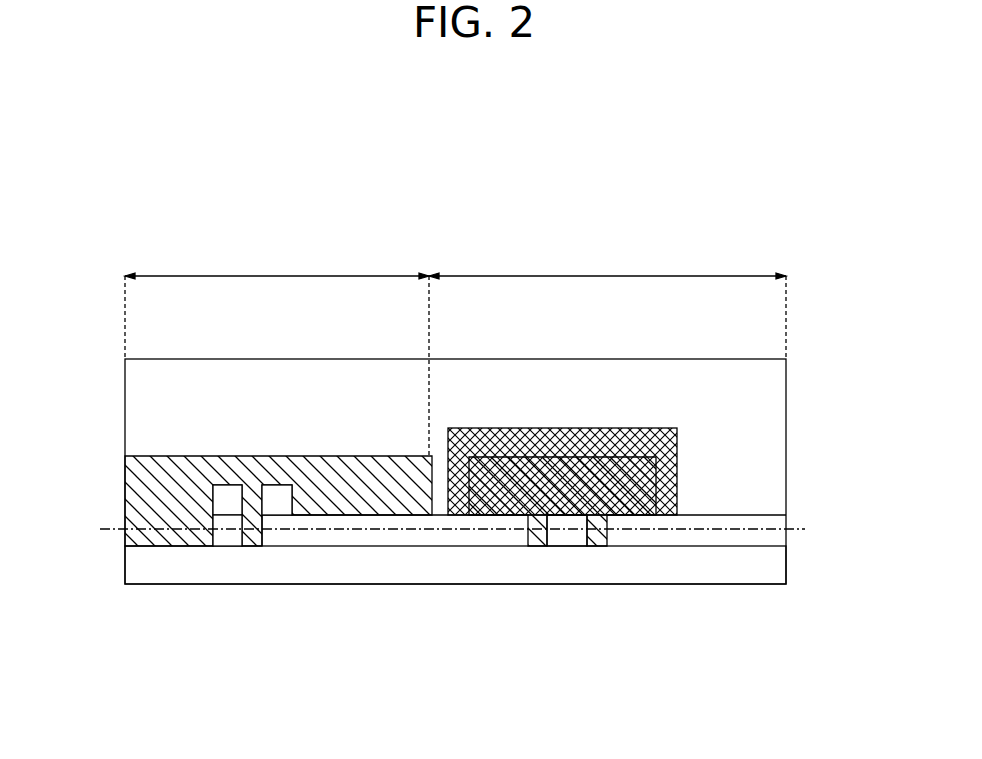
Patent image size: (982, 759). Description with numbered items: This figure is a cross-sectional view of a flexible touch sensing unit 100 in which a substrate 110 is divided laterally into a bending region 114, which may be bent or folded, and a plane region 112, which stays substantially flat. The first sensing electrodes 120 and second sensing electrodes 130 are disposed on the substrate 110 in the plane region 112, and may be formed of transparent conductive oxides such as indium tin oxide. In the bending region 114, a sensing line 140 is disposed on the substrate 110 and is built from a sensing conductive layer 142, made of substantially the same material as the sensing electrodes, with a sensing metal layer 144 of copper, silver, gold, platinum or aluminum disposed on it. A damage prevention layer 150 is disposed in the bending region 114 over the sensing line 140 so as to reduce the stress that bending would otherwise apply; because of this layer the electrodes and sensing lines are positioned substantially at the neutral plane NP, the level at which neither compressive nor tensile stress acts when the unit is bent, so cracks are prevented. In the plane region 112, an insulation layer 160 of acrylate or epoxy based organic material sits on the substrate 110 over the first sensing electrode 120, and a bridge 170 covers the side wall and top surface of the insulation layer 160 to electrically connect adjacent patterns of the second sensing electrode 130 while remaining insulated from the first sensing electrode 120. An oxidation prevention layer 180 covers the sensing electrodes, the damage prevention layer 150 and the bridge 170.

The flexible touch sensing unit 100 is at (437, 160).
The substrate 110 is at (133, 563).
The plane region 112 is at (607, 305).
The bending region 114 is at (277, 353).
The first sensing electrode 120 is at (569, 539).
The second sensing electrode 130 is at (689, 539).
The sensing line 140 is at (147, 517).
The sensing conductive layer 142 is at (213, 543).
The sensing metal layer 144 is at (220, 499).
The damage prevention layer 150 is at (275, 470).
The insulation layer 160 is at (524, 470).
The bridge 170 is at (605, 437).
The oxidation prevention layer 180 is at (777, 443).
The neutral plane NP is at (468, 530).